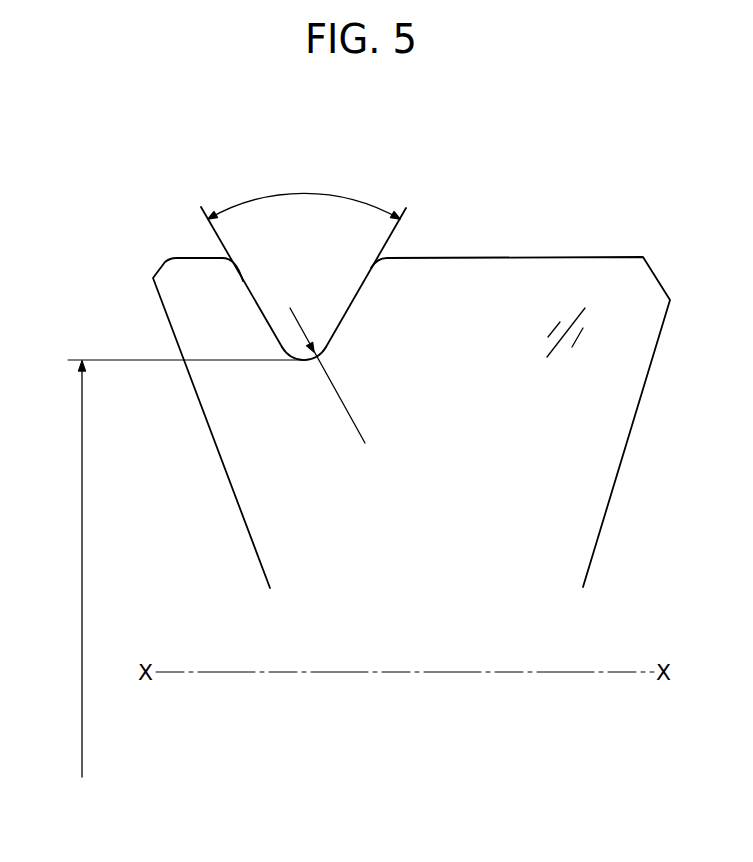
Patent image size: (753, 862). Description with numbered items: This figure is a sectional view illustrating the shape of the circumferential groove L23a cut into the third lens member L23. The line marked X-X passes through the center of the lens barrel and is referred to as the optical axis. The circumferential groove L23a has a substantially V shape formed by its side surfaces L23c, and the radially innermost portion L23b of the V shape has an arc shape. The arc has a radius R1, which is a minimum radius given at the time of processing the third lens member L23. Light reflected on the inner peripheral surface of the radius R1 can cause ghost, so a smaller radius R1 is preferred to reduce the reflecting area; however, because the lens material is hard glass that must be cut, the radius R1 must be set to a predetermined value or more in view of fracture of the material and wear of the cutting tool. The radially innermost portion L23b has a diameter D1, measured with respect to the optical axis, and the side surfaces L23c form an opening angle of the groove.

The third lens member L23 is at (383, 359).
The circumferential groove L23a is at (282, 331).
The radially innermost portion L23b is at (305, 362).
The side surfaces L23c is at (257, 308).
The radius R1 is at (343, 380).
The diameter D1 is at (176, 568).